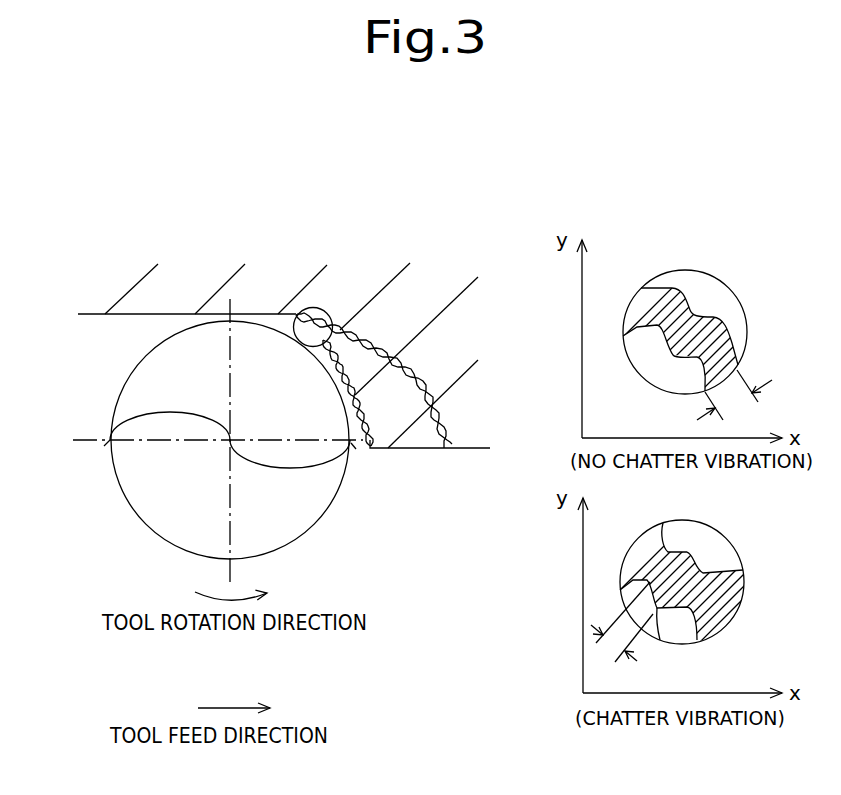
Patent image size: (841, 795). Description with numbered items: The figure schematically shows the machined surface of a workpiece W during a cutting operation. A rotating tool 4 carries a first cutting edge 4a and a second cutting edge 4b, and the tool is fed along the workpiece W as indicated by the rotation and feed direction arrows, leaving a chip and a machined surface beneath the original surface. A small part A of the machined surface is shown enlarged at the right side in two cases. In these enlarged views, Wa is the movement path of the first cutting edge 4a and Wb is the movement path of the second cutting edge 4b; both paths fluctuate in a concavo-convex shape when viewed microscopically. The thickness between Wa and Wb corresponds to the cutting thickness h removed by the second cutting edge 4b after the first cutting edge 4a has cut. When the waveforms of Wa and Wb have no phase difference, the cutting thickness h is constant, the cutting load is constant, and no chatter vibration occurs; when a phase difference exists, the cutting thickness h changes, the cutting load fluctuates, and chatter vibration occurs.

The tool 4 is at (133, 370).
The first cutting edge 4a is at (358, 450).
The second cutting edge 4b is at (104, 446).
The workpiece W is at (265, 281).
The part A is at (334, 301).
The movement path of the first cutting edge Wa is at (640, 326).
The movement path of the second cutting edge Wb is at (700, 273).
The cutting thickness h is at (734, 398).